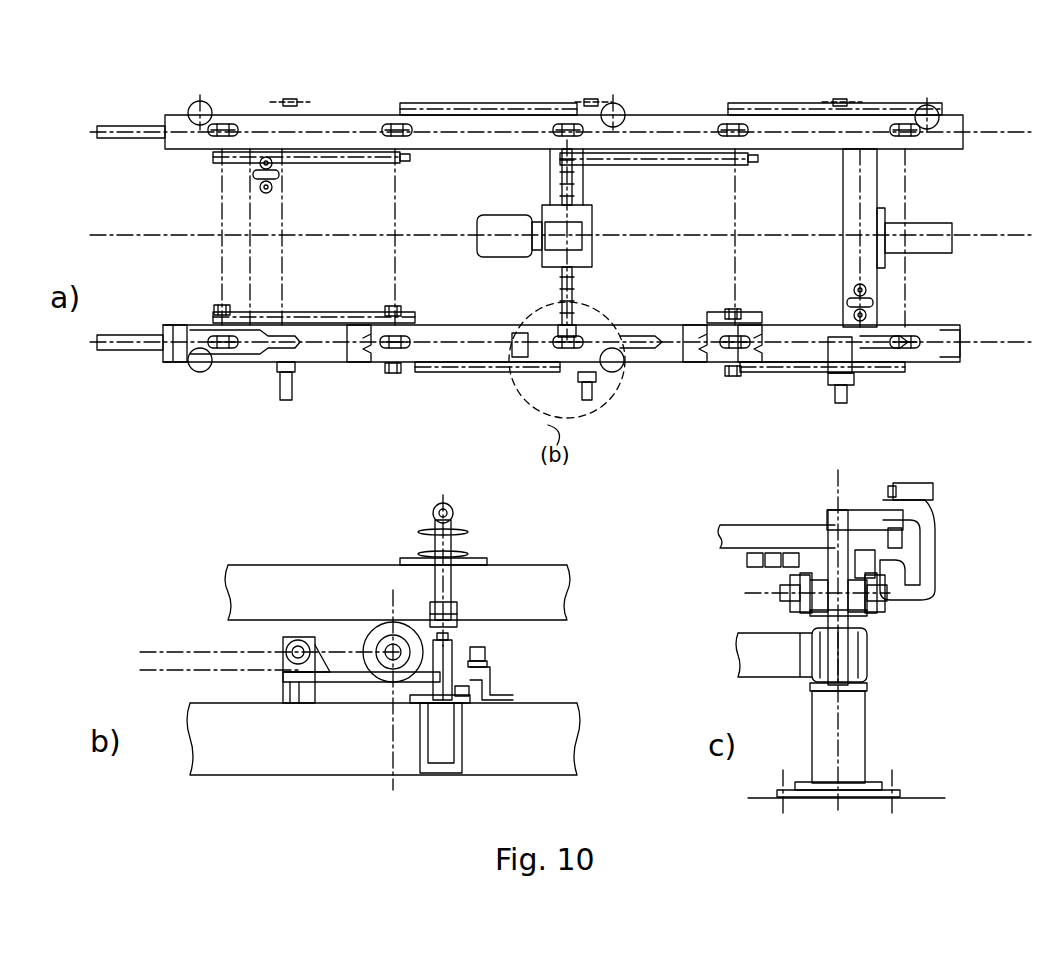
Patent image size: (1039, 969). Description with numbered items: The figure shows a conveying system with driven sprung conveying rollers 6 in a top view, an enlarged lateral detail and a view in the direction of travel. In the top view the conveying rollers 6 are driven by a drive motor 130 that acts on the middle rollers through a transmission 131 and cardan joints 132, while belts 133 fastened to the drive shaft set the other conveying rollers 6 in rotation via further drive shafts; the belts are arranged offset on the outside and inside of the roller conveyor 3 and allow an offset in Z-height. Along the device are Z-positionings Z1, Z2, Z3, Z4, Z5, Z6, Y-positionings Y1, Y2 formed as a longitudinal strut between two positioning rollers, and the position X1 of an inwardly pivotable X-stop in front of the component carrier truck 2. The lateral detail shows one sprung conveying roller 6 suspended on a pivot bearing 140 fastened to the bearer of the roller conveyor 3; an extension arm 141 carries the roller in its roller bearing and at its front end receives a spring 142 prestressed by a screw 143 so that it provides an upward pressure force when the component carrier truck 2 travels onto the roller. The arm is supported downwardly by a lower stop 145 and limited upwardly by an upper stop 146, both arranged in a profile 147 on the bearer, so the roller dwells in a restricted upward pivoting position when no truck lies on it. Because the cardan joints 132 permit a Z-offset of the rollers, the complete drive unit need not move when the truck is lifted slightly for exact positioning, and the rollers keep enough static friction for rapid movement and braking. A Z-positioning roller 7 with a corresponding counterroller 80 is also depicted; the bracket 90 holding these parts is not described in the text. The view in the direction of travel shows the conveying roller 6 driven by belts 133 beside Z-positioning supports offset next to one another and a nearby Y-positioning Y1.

In FIG. 10b, the component carrier truck 2 is at (262, 580).
In FIG. 10c, the component carrier truck 2 is at (740, 530).
In FIG. 10b, the roller conveyor 3 is at (210, 745).
In FIG. 10a, the conveying roller 6 is at (223, 124).
In FIG. 10b, the conveying roller 6 is at (375, 640).
In FIG. 10c, the conveying roller 6 is at (870, 625).
In FIG. 10b, the Z-positioning roller 7 is at (460, 575).
In FIG. 10c, the Z-positioning roller 7 is at (905, 538).
In FIG. 10b, the counterroller 80 is at (450, 505).
In FIG. 10c, the counterroller 80 is at (900, 483).
In FIG. 10b, the holding bracket 90 is at (490, 528).
In FIG. 10c, the holding bracket 90 is at (930, 500).
In FIG. 10a, the drive motor 130 is at (520, 215).
In FIG. 10a, the transmission 131 is at (575, 240).
In FIG. 10a, the cardan joints 132 is at (572, 175).
In FIG. 10a, the belts 133 is at (565, 103).
In FIG. 10c, the belts 133 is at (798, 590).
In FIG. 10a, the pivot bearing 140 is at (515, 333).
In FIG. 10b, the pivot bearing 140 is at (283, 650).
In FIG. 10b, the extension arm 141 is at (330, 688).
In FIG. 10b, the spring 142 is at (415, 700).
In FIG. 10b, the screw 143 is at (455, 715).
In FIG. 10b, the lower stop 145 is at (475, 688).
In FIG. 10b, the upper stop 146 is at (492, 660).
In FIG. 10b, the profile 147 is at (500, 690).
In FIG. 10a, the X-stop position X1 is at (935, 222).
In FIG. 10a, the Y-positioning Y1 is at (282, 180).
In FIG. 10c, the Y-positioning Y1 is at (745, 572).
In FIG. 10a, the Y-positioning Y2 is at (888, 285).
In FIG. 10a, the Z-positioning Z1 is at (290, 99).
In FIG. 10a, the Z-positioning Z2 is at (292, 375).
In FIG. 10a, the Z-positioning Z3 is at (592, 99).
In FIG. 10a, the Z-positioning Z4 is at (596, 380).
In FIG. 10a, the Z-positioning Z5 is at (840, 99).
In FIG. 10a, the Z-positioning Z6 is at (854, 380).